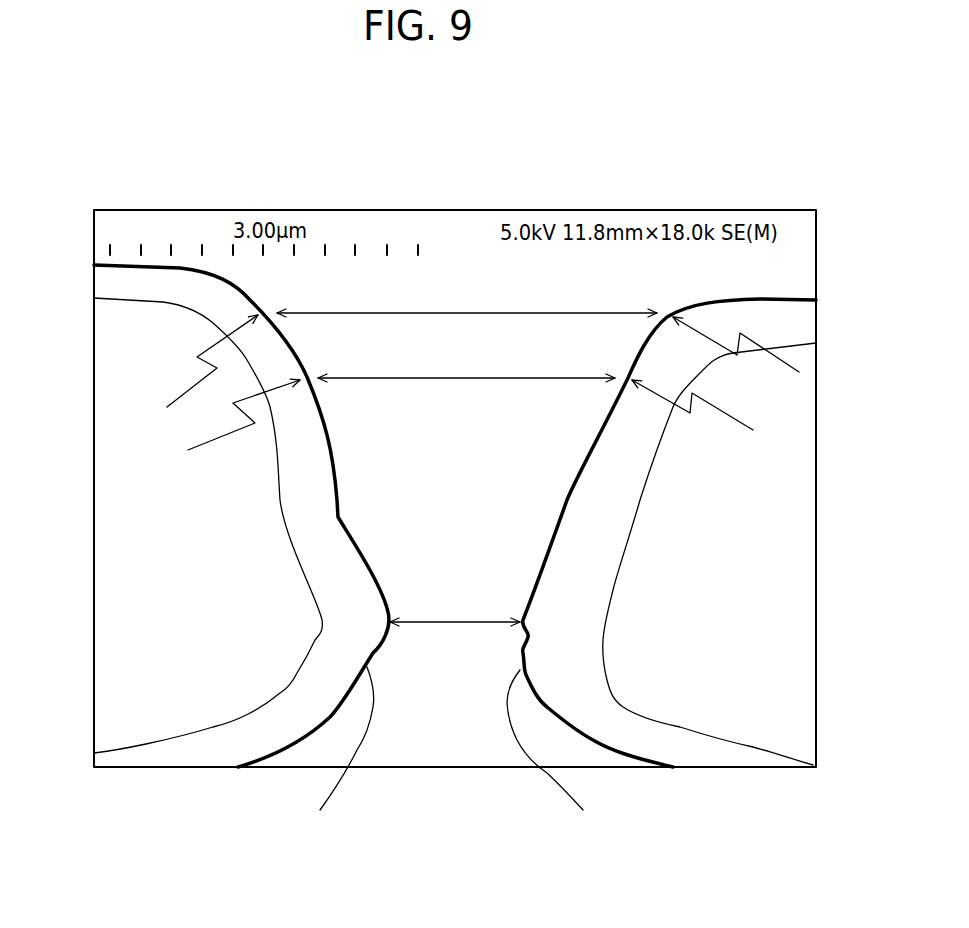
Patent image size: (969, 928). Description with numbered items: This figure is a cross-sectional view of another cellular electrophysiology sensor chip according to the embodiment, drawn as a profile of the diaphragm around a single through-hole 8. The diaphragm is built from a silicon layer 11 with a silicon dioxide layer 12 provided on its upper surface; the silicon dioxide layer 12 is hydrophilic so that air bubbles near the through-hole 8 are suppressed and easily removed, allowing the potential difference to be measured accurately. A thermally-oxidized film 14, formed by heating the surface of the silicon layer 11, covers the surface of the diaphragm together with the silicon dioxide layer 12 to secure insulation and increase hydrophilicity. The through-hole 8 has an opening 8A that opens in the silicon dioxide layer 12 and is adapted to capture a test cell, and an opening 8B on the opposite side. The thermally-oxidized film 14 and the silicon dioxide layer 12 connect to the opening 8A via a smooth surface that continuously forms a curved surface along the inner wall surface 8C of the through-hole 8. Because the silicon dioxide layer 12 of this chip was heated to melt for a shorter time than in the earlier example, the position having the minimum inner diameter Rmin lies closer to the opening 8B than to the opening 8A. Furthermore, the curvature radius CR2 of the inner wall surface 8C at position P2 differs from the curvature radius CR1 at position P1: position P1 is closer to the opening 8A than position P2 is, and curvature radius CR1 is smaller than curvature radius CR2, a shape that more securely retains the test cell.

The through-hole 8 is at (452, 662).
The opening 8A is at (433, 275).
The opening 8B is at (452, 758).
The inner wall surface 8C is at (458, 753).
The silicon layer 11 is at (94, 478).
The silicon dioxide layer 12 is at (110, 283).
The thermally-oxidized film 14 is at (143, 757).
The position P1 is at (467, 328).
The position P2 is at (466, 393).
The minimum inner diameter Rmin is at (455, 607).
The curvature radius CR1 is at (469, 361).
The curvature radius CR2 is at (470, 418).